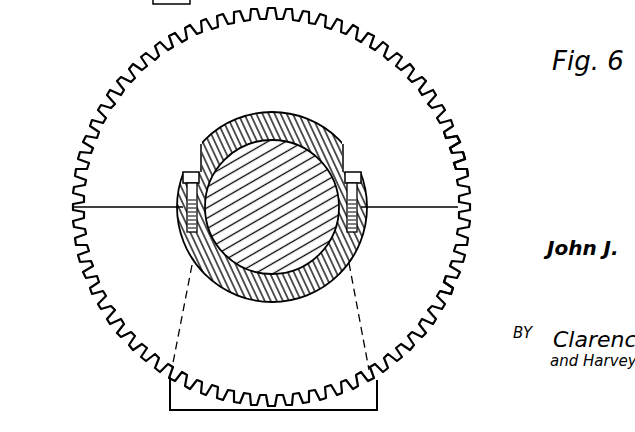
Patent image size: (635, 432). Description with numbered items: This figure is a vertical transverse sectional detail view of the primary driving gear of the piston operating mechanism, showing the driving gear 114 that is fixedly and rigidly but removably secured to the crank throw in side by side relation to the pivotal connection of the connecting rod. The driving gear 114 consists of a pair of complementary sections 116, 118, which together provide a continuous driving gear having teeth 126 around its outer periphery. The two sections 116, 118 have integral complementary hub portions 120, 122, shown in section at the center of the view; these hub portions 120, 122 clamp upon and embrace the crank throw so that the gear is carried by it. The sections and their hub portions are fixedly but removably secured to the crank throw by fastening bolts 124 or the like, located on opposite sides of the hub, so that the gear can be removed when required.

The driving gear 114 is at (408, 120).
The complementary section 116 is at (437, 147).
The teeth 126 is at (459, 163).
The complementary section 118 is at (423, 285).
The hub portion 120 is at (269, 126).
The hub portion 122 is at (282, 287).
The fastening bolts 124 is at (184, 178).